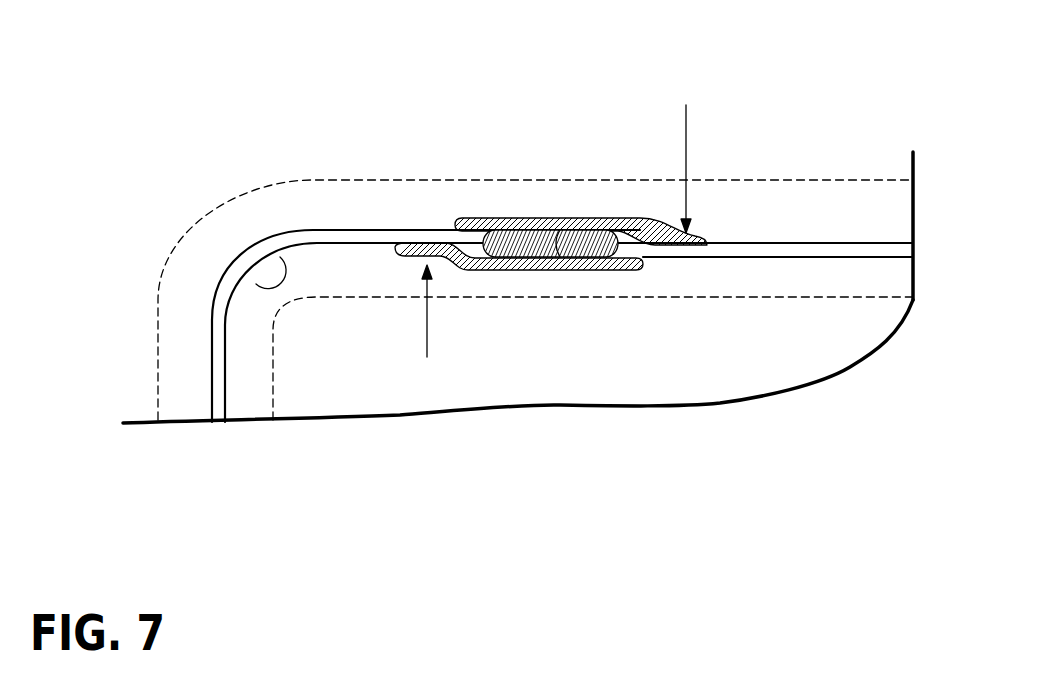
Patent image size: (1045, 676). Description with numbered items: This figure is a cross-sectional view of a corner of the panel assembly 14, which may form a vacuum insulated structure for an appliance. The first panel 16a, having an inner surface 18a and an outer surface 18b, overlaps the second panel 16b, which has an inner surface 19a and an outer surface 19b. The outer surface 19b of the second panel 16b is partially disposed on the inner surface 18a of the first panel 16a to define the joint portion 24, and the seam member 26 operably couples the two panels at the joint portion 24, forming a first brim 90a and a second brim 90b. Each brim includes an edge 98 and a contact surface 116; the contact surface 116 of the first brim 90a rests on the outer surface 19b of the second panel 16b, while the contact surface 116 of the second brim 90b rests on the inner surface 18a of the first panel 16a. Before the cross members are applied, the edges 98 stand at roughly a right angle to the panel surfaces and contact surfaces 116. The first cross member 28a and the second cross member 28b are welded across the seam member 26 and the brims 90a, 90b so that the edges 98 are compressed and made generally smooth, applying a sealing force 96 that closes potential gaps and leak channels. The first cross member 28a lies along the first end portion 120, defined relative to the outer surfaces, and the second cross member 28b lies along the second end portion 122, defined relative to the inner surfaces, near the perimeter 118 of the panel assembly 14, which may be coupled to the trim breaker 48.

The panel assembly 14 is at (167, 130).
The first panel 16a is at (210, 347).
The second panel 16b is at (862, 243).
The inner surface of first panel 18a is at (255, 285).
The outer surface of first panel 18b is at (340, 230).
The inner surface of second panel 19a is at (797, 258).
The outer surface of second panel 19b is at (772, 243).
The joint portion 24 is at (477, 230).
The seam member 26 is at (560, 228).
The first cross member 28a is at (497, 218).
The second cross member 28b is at (573, 270).
The trim breaker 48 is at (825, 177).
The first brim 90a is at (620, 218).
The second brim 90b is at (478, 248).
The sealing force 96 is at (687, 130).
The edge 98 is at (448, 250).
The contact surface 116 is at (448, 250).
The perimeter 118 is at (220, 408).
The first end portion 120 is at (308, 230).
The second end portion 122 is at (707, 260).